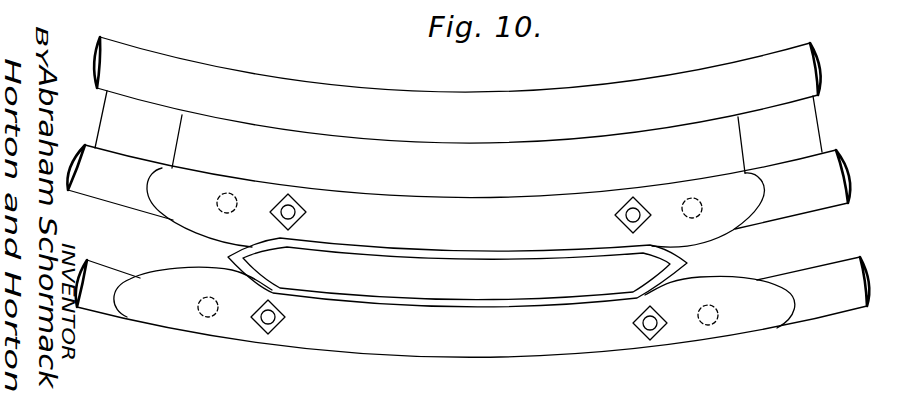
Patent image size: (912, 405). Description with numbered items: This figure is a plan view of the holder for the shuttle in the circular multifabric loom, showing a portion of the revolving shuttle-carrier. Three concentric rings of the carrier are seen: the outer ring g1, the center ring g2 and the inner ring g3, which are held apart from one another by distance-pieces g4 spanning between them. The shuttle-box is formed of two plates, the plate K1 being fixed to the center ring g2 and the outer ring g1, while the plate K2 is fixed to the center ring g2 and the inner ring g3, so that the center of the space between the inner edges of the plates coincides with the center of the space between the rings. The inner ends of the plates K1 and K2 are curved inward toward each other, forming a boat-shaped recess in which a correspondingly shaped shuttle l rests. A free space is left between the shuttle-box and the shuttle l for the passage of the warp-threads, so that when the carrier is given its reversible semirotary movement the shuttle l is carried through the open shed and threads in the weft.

The outer ring g1 is at (820, 312).
The center ring g2 is at (820, 201).
The inner ring g3 is at (475, 93).
The distance-pieces g4 is at (167, 143).
The shuttle-box plate K1 is at (403, 343).
The shuttle-box plate K2 is at (463, 198).
The shuttle l is at (457, 272).